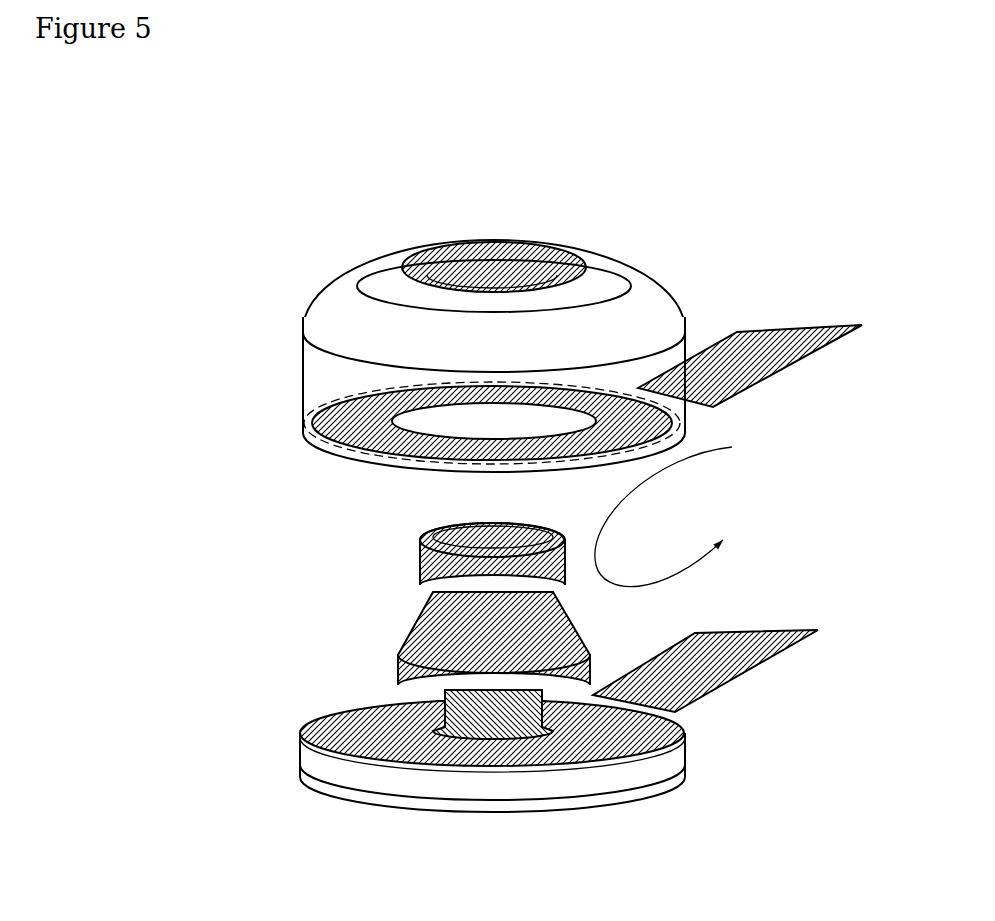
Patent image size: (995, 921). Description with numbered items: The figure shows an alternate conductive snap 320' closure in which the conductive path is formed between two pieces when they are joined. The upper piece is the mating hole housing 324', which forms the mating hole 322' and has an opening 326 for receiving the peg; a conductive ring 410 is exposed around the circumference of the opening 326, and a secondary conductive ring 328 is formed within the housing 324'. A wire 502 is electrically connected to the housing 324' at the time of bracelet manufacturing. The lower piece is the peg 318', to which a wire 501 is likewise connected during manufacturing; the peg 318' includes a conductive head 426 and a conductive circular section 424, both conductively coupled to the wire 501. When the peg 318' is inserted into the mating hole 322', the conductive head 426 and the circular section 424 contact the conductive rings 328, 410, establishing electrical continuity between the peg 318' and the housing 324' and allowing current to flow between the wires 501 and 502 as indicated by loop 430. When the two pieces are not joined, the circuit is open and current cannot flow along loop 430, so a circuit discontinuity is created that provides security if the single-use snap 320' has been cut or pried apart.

The conductive snap 320' is at (525, 493).
The mating hole 322' is at (532, 323).
The mating hole housing 324' is at (450, 259).
The secondary conductive ring 328 is at (510, 252).
The opening 326 is at (492, 423).
The conductive ring 410 is at (685, 428).
The loop 430 is at (663, 517).
The peg 318' is at (424, 558).
The conductive head 426 is at (565, 642).
The conductive circular section 424 is at (685, 743).
The wire 501 is at (743, 670).
The wire 502 is at (729, 343).